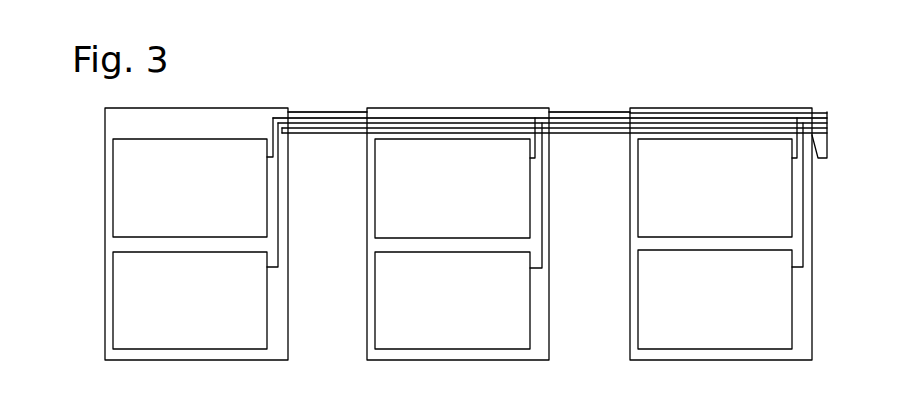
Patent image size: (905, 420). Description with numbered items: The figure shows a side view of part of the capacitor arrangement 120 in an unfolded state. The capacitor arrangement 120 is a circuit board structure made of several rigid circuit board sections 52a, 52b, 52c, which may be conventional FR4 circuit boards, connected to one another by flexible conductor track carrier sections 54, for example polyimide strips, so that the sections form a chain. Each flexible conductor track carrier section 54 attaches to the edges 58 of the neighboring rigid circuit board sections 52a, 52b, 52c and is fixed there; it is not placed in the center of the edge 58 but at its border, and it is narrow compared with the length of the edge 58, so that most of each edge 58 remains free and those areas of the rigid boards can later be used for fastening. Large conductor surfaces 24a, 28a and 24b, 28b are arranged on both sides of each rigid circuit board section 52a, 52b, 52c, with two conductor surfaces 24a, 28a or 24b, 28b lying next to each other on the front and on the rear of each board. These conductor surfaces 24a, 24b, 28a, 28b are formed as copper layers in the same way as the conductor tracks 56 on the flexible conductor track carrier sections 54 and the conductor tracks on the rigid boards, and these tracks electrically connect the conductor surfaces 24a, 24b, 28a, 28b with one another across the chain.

The capacitor arrangement 120 is at (723, 65).
The rigid circuit board section 52a is at (280, 355).
The rigid circuit board section 52b is at (493, 353).
The third panel frame 52c is at (732, 353).
The conductor surface 24a is at (127, 196).
The conductor surface 28a is at (127, 305).
The conductor surface 24b is at (385, 190).
The conductor surface 28b is at (385, 318).
The flexible conductor track carrier section 54 is at (332, 111).
The conductor track 56 is at (300, 123).
The edge 58 is at (290, 225).